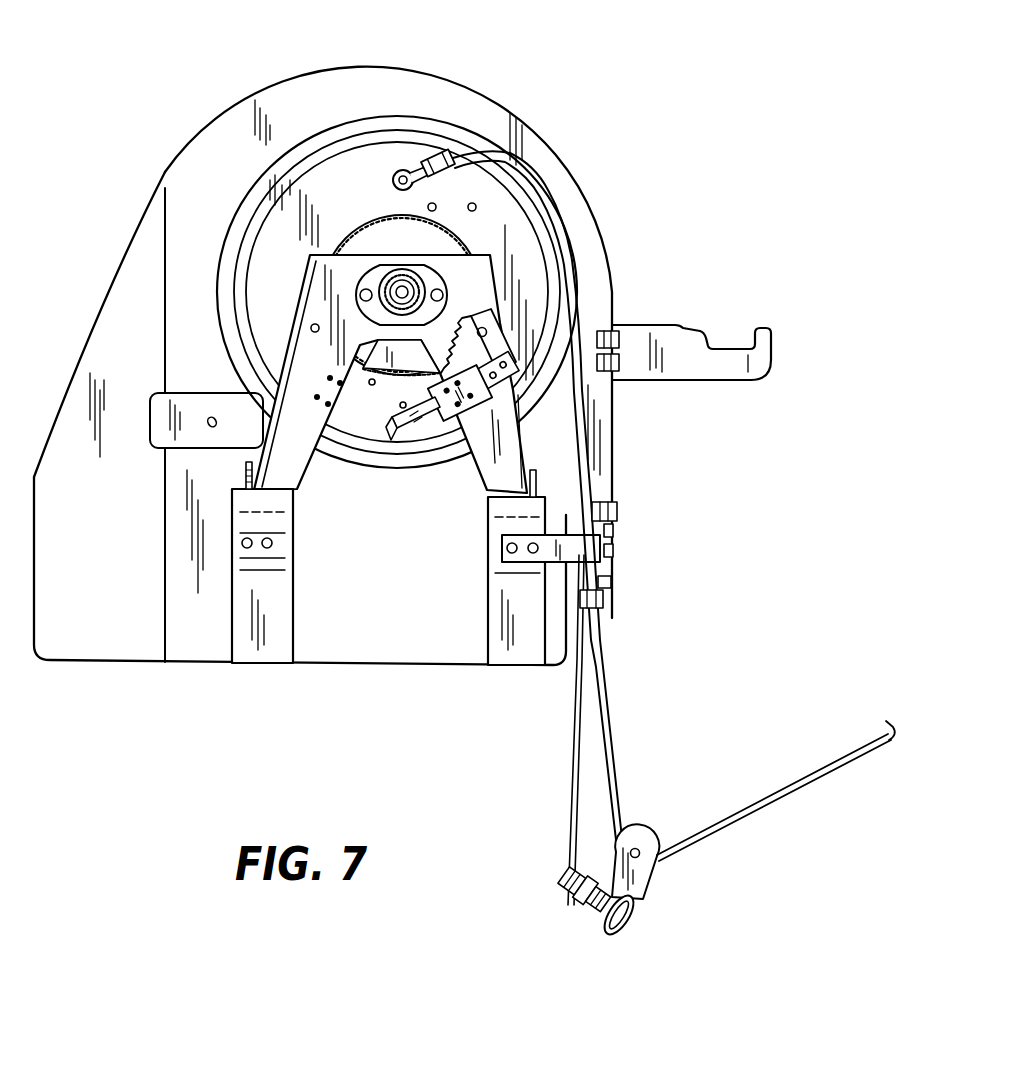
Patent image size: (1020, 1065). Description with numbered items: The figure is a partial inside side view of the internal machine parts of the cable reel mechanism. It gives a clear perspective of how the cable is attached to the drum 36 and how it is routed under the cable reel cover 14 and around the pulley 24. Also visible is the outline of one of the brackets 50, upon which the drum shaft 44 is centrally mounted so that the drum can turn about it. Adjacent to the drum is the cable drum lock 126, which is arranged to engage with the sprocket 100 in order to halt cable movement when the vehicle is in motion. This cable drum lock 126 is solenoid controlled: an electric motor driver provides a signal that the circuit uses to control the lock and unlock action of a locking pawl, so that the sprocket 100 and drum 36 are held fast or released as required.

The cable reel cover 14 is at (497, 103).
The drum 36 is at (355, 177).
The sprocket 100 is at (372, 230).
The drum shaft 44 is at (423, 283).
The bracket 50 is at (303, 355).
The cable drum lock 126 is at (500, 343).
The pulley 24 is at (646, 840).